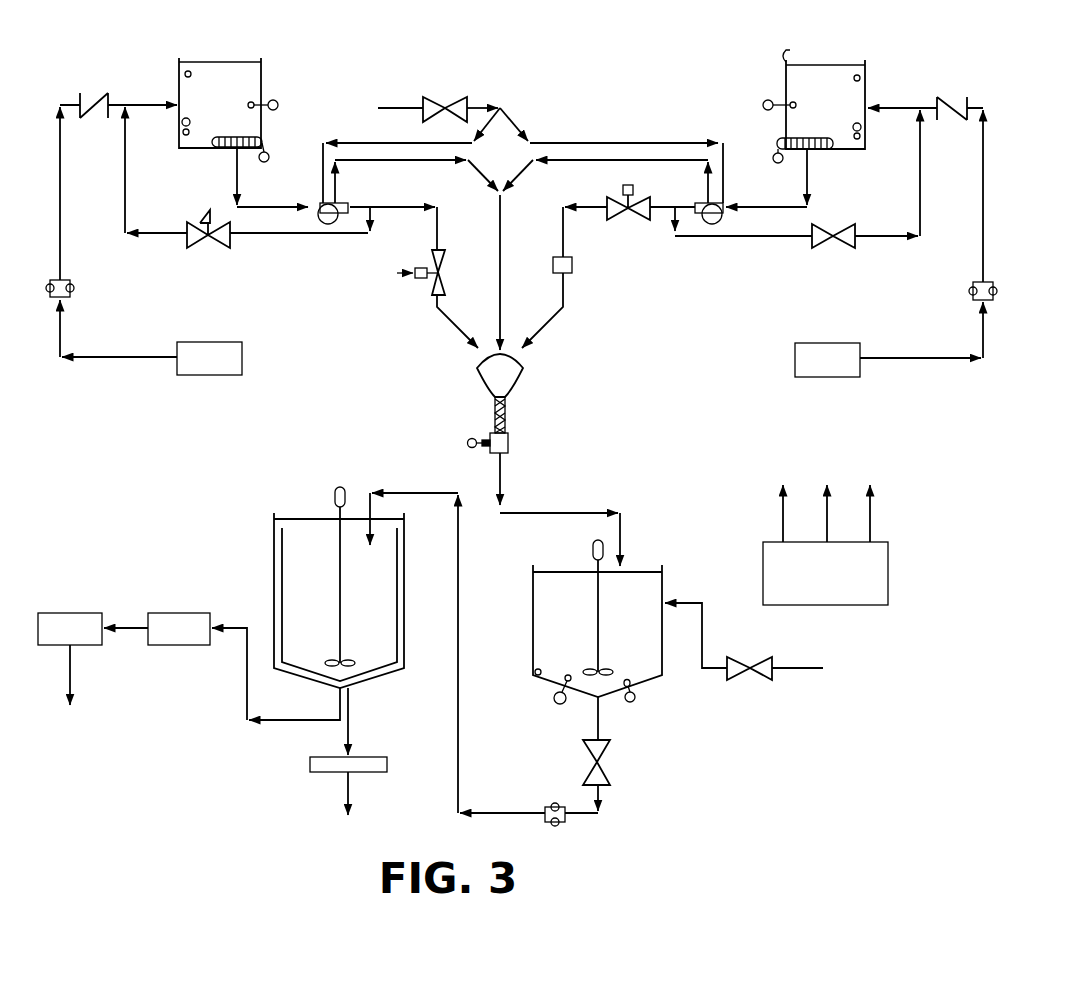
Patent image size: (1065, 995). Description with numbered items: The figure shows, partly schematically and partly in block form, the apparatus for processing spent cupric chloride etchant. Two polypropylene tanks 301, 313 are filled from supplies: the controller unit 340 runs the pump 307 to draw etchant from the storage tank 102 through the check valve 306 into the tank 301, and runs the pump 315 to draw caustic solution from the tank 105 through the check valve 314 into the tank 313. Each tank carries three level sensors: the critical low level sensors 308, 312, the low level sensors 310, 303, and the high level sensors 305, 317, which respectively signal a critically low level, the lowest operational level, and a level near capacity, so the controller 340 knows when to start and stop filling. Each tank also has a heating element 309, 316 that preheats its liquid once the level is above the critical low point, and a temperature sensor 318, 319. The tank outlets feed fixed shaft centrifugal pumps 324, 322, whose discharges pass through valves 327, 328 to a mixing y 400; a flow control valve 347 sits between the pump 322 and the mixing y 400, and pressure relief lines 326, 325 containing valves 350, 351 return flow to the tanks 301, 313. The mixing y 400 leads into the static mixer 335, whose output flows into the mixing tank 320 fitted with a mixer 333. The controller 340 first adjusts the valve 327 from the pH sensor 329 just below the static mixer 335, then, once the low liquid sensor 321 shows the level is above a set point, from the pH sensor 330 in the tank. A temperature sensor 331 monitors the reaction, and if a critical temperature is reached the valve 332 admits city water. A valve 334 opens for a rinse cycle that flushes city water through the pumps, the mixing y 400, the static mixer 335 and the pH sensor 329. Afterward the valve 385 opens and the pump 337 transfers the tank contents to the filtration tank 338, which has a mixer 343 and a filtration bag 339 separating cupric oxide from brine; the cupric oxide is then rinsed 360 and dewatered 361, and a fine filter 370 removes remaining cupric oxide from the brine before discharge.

The storage tank 102 is at (193, 373).
The tank 105 is at (811, 374).
The tank 301 is at (263, 61).
The low level sensor 303 is at (866, 95).
The liquid level sensor 305 is at (191, 73).
The check valve 306 is at (83, 93).
The pump 307 is at (74, 288).
The level sensor 308 is at (187, 135).
The heating element 309 is at (262, 140).
The low level sensor 310 is at (182, 122).
The level sensor 312 is at (858, 140).
The tank 313 is at (790, 50).
The check valve 314 is at (950, 97).
The pump 315 is at (997, 291).
The heating element 316 is at (815, 149).
The liquid level sensor 317 is at (857, 75).
The temperature sensor 318 is at (278, 105).
The temperature sensor 319 is at (764, 108).
The mixing tank 320 is at (662, 585).
The low liquid sensor 321 is at (535, 672).
The pump 322 is at (722, 203).
The pump 324 is at (340, 203).
The pressure relief line 325 is at (757, 236).
The pressure relief line 326 is at (290, 233).
The valve 327 is at (446, 275).
The valve 328 is at (628, 220).
The pH sensor 329 is at (469, 440).
The pH sensor 330 is at (635, 697).
The temperature sensor 331 is at (559, 704).
The valve 332 is at (750, 680).
The mixer 333 is at (603, 548).
The valve 334 is at (445, 97).
The static mixer 335 is at (505, 415).
The pump 337 is at (565, 820).
The filtration tank 338 is at (404, 519).
The filtration bag 339 is at (282, 590).
The controller unit 340 is at (808, 589).
The mixer 343 is at (343, 487).
The flow control valve 347 is at (572, 265).
The valve 350 is at (195, 248).
The valve 351 is at (840, 248).
The rinsing 360 is at (160, 613).
The dewatering 361 is at (50, 613).
The filter 370 is at (310, 762).
The valve 385 is at (610, 762).
The mixing y 400 is at (523, 370).